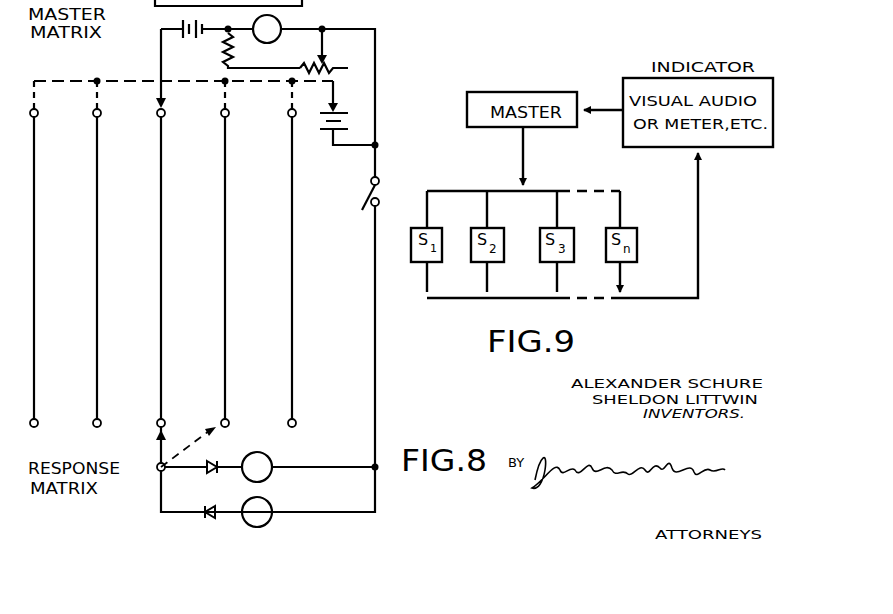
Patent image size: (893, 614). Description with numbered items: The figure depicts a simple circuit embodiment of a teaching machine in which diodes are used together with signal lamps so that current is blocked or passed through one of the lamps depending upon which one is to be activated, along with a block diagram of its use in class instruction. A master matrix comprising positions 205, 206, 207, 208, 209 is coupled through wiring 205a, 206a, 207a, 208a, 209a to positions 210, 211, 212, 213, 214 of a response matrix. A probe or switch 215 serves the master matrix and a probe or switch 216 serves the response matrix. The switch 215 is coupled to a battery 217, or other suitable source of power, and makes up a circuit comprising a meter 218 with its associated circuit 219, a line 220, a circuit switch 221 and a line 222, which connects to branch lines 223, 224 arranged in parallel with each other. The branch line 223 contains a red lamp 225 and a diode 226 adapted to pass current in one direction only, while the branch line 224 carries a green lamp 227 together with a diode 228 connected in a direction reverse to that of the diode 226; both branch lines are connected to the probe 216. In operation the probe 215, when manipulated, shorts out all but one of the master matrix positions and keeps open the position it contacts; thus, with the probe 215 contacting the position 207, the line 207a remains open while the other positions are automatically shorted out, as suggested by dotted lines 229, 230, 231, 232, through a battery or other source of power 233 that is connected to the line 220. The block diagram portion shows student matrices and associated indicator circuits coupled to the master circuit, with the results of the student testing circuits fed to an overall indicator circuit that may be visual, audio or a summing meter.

The master matrix position 205 is at (37, 116).
The master matrix position 206 is at (100, 116).
The master matrix position 207 is at (164, 116).
The master matrix position 208 is at (228, 116).
The master matrix position 209 is at (295, 116).
The wiring 205a is at (34, 270).
The wiring 206a is at (97, 270).
The line 207a is at (161, 270).
The wiring 208a is at (225, 270).
The wiring 209a is at (292, 275).
The response matrix position 210 is at (37, 420).
The response matrix position 211 is at (100, 420).
The response matrix position 212 is at (164, 420).
The response matrix position 213 is at (228, 420).
The response matrix position 214 is at (295, 420).
The probe or switch 215 is at (163, 97).
The probe or switch 216 is at (203, 436).
The battery 217 is at (190, 40).
The meter 218 is at (272, 47).
The associated circuit 219 is at (305, 48).
The line 220 is at (377, 57).
The circuit switch 221 is at (369, 186).
The line 222 is at (373, 290).
The branch line 223 is at (295, 466).
The branch line 224 is at (312, 511).
The red lamp 225 is at (269, 447).
The diode 226 is at (208, 463).
The green lamp 227 is at (273, 511).
The diode 228 is at (212, 511).
The dotted line 229 is at (36, 97).
The dotted line 230 is at (99, 97).
The dotted line 231 is at (227, 97).
The dotted line 232 is at (290, 104).
The battery 233 is at (348, 113).